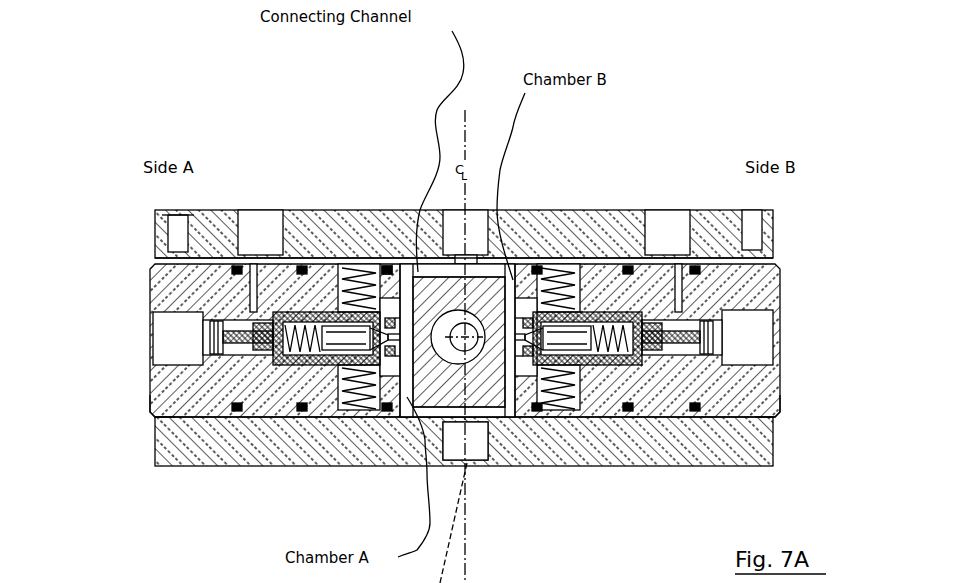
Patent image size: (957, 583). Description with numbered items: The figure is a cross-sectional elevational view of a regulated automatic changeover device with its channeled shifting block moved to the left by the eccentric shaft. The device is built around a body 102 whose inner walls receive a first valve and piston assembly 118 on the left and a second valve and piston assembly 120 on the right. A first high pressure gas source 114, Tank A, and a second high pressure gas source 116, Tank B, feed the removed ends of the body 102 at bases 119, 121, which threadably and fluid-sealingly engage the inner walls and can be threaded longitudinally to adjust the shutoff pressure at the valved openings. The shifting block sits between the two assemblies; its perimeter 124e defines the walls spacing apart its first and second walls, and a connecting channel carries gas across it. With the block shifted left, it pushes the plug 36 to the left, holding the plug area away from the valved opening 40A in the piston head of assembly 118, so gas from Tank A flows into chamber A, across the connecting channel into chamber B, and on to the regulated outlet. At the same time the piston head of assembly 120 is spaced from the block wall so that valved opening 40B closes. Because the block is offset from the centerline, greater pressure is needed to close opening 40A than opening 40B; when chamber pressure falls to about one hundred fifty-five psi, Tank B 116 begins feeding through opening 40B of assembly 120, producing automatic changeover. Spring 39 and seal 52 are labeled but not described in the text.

The first valve and piston assembly 118 is at (268, 262).
The spring 39 is at (315, 308).
The seal / O-ring 52 is at (372, 263).
The second valve and piston assembly 120 is at (653, 267).
The plug 36 is at (604, 265).
The first high pressure gas source 114 is at (150, 333).
The second high pressure gas source 116 is at (780, 333).
The base 119 is at (160, 400).
The base 121 is at (780, 402).
The body 102 is at (282, 466).
The valved opening 40A is at (393, 398).
The valved piston head opening 40B is at (527, 405).
The perimeter 124e is at (500, 407).